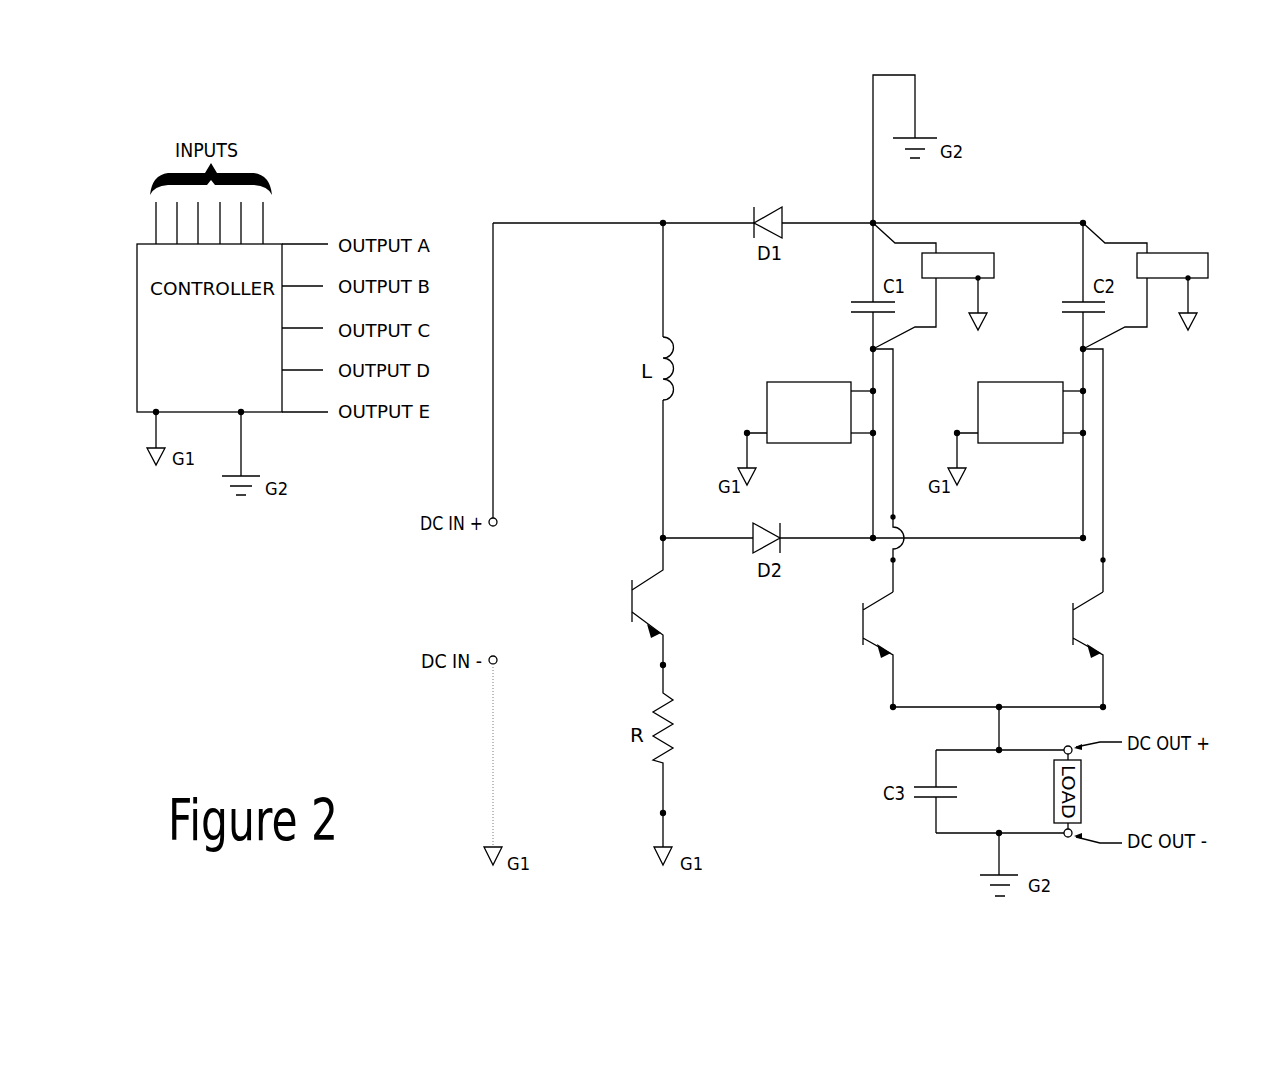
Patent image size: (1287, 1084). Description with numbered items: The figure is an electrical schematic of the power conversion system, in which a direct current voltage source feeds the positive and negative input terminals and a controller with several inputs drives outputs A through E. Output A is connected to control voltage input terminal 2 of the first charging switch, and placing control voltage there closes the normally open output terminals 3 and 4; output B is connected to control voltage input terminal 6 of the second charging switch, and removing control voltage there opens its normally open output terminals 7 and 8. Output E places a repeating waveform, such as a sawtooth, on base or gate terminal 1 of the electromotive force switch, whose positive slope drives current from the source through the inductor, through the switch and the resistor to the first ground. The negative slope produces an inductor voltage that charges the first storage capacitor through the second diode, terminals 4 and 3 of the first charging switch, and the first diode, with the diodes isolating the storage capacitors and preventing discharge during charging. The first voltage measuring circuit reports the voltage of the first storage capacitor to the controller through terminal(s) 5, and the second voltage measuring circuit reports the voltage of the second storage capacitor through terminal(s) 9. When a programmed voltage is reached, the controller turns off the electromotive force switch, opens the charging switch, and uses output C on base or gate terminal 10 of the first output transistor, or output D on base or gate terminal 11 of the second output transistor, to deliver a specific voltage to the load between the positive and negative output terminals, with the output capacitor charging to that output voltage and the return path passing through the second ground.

The base or gate terminal 1 is at (632, 603).
The control voltage input terminal 2 is at (767, 391).
The output terminal 3 is at (867, 385).
The output terminal 4 is at (867, 439).
The terminal(s) 5 is at (994, 265).
The control voltage input terminal 6 is at (978, 391).
The output terminal 7 is at (1078, 385).
The output terminal 8 is at (1078, 439).
The terminal(s) 9 is at (1208, 265).
The base or gate terminal 10 is at (863, 623).
The base or gate terminal 11 is at (1073, 623).